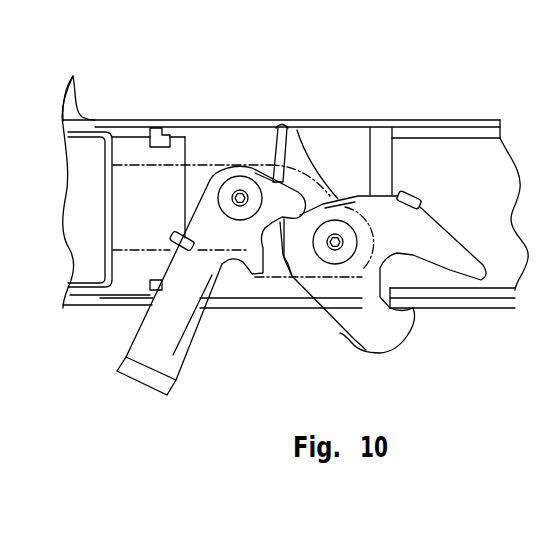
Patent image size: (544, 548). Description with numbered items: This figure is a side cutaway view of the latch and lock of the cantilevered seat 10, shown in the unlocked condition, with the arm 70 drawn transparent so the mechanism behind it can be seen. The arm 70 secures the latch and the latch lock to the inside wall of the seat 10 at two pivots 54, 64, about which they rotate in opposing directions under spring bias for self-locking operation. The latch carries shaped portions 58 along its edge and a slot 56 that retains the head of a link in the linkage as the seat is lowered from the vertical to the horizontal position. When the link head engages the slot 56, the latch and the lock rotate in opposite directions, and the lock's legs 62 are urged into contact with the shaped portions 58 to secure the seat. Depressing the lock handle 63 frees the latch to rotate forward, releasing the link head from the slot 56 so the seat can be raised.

The cantilevered seat 10 is at (416, 118).
The pivot 54 is at (341, 195).
The slot 56 is at (420, 310).
The shaped portions 58 is at (294, 126).
The legs 62 is at (255, 280).
The lock handle 63 is at (137, 374).
The pivot 64 is at (240, 188).
The arm 70 is at (141, 162).